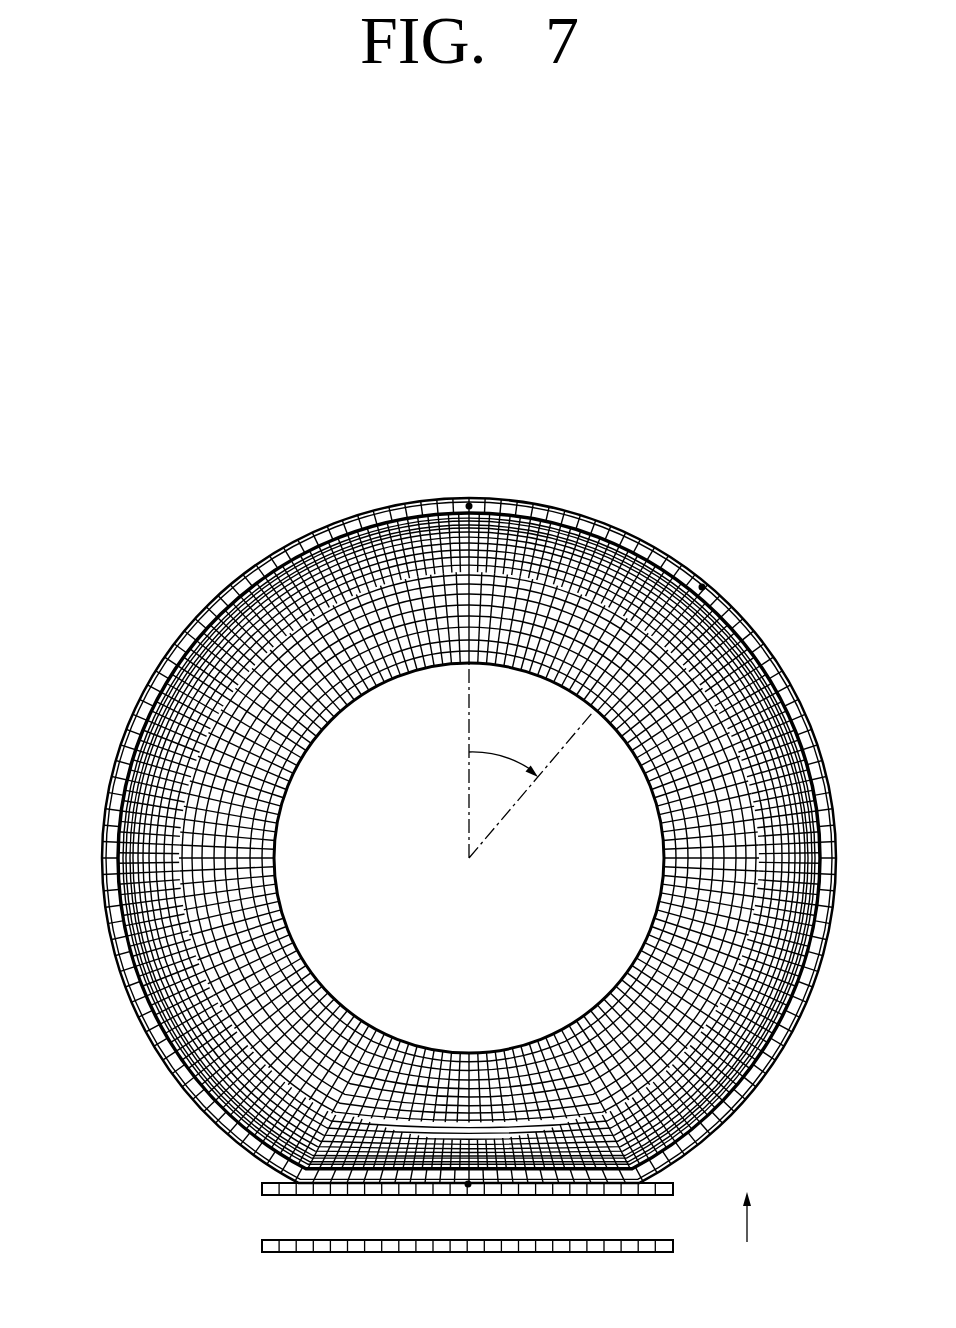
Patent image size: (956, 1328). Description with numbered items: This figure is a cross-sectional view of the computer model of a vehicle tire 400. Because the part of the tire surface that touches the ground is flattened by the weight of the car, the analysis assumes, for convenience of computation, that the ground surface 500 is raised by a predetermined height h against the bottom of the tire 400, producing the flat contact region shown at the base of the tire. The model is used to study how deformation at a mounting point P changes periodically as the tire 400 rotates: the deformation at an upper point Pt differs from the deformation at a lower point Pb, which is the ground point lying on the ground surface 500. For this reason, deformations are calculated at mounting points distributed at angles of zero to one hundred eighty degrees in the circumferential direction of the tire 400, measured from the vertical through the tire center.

The tire 400 is at (150, 538).
The ground surface 500 is at (262, 1187).
The mounting point P is at (702, 587).
The upper point Pt is at (469, 505).
The lower point Pb is at (468, 1186).
The predetermined height h is at (759, 1217).